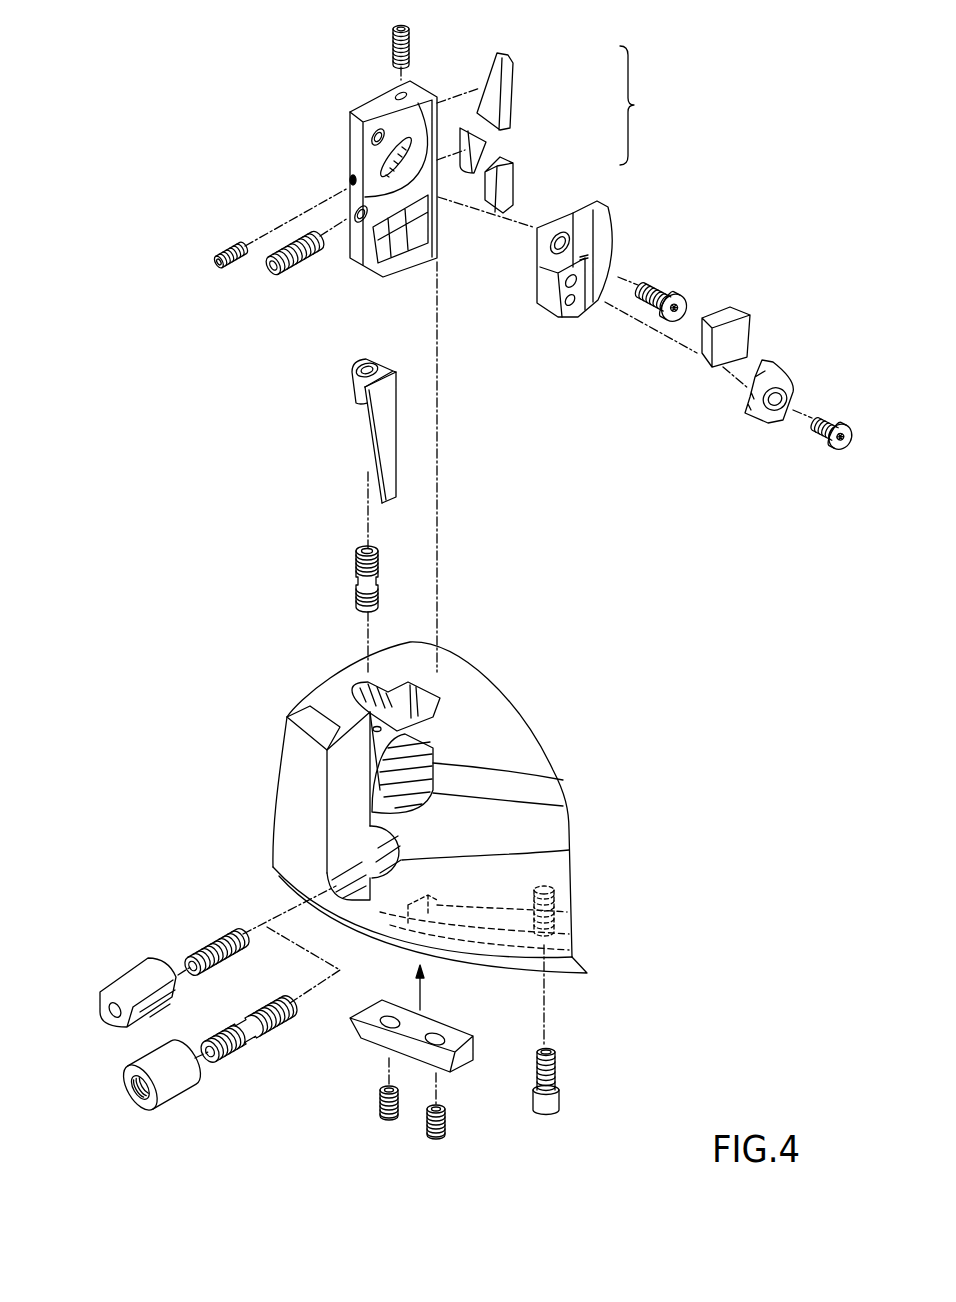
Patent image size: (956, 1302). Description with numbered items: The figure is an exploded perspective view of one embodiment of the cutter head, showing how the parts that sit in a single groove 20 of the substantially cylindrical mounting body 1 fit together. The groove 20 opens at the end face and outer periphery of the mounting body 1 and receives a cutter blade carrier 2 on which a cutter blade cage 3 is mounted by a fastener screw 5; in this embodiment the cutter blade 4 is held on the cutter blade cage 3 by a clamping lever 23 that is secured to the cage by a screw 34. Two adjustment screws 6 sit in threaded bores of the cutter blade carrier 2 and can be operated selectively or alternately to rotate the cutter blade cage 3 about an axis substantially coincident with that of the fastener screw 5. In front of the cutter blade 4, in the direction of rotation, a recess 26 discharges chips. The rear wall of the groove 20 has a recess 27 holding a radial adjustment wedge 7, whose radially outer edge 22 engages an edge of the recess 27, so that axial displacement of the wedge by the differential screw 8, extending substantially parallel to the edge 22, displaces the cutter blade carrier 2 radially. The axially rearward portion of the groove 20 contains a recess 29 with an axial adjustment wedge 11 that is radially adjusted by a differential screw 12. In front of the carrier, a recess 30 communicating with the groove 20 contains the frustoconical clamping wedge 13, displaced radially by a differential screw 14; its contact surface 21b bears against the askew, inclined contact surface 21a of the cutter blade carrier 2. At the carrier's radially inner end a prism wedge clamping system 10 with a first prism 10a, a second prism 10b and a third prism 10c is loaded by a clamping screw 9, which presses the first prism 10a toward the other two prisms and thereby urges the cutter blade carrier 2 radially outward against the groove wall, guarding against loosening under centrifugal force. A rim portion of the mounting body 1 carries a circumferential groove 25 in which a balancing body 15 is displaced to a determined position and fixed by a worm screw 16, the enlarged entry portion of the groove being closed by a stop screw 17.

The mounting body 1 is at (478, 740).
The cutter blade carrier 2 is at (350, 110).
The cutter blade cage 3 is at (603, 243).
The cutter blade 4 is at (732, 333).
The fastener screw 5 is at (660, 287).
The adjustment screws 6 is at (393, 44).
The radial adjustment wedge 7 is at (380, 423).
The differential screw 8 is at (358, 588).
The clamping screw 9 is at (233, 246).
The prism wedge clamping system 10 is at (641, 105).
The first prism 10a is at (483, 146).
The second prism 10b is at (508, 192).
The third prism 10c is at (505, 102).
The axial adjustment wedge 11 is at (135, 990).
The differential screw 12 is at (207, 943).
The clamping wedge 13 is at (173, 1077).
The differential screw 14 is at (250, 1042).
The balancing body 15 is at (375, 1037).
The worm screw 16 is at (430, 1135).
The stop screw 17 is at (543, 1103).
The groove 20 is at (350, 763).
The contact surface 21a is at (388, 228).
The contact surface 21b is at (115, 1080).
The radially outer edge 22 is at (345, 462).
The clamping lever 23 is at (773, 362).
The circumferential groove 25 is at (558, 952).
The recess 26 is at (430, 775).
The recess 27 is at (367, 712).
The recess 29 is at (387, 873).
The recess 30 is at (567, 849).
The screw 34 is at (838, 420).